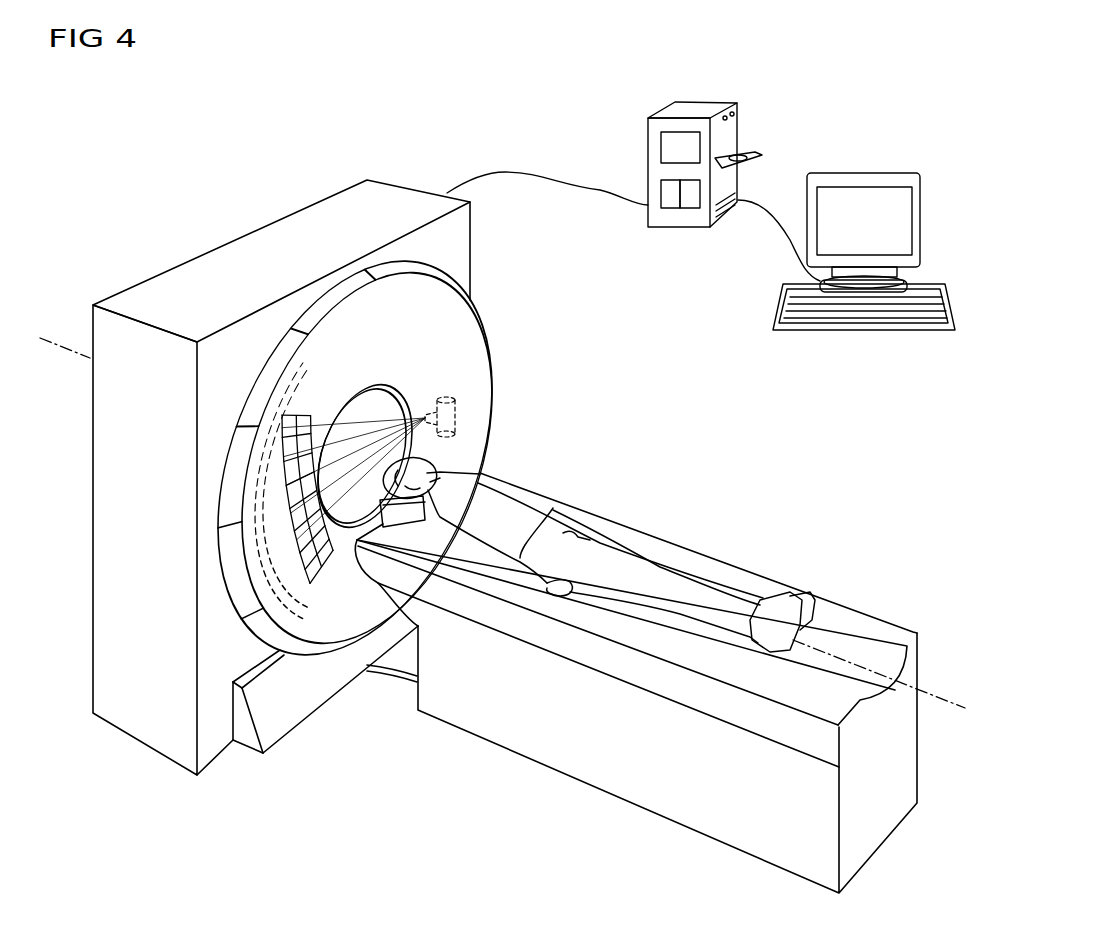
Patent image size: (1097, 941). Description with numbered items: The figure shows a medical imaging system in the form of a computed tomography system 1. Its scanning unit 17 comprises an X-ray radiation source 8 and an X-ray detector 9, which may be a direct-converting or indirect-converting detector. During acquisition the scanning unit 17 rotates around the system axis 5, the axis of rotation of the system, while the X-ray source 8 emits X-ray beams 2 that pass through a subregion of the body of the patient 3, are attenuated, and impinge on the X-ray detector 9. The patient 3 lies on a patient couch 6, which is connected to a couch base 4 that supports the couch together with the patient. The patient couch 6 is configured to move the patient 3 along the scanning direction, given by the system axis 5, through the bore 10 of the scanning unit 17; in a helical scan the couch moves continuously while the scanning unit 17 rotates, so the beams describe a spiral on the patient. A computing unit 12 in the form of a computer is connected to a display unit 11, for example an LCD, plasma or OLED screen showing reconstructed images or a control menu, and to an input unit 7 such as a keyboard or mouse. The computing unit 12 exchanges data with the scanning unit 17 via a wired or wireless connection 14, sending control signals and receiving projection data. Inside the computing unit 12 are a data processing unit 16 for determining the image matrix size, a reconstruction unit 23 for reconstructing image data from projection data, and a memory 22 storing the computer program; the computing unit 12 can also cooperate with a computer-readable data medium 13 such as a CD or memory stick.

The computed tomography system 1 is at (324, 477).
The X-ray beams 2 is at (388, 418).
The patient 3 is at (545, 515).
The couch base 4 is at (636, 683).
The system axis 5 is at (953, 705).
The patient couch 6 is at (866, 623).
The input unit 7 is at (855, 333).
The X-ray radiation source 8 is at (458, 410).
The X-ray detector 9 is at (293, 588).
The bore 10 is at (357, 410).
The display unit 11 is at (862, 172).
The computing unit 12 is at (701, 157).
The computer-readable data medium 13 is at (745, 152).
The connection 14 is at (504, 172).
The data processing unit 16 is at (672, 207).
The scanning unit 17 is at (325, 477).
The memory 22 is at (672, 148).
The reconstruction unit 23 is at (690, 207).